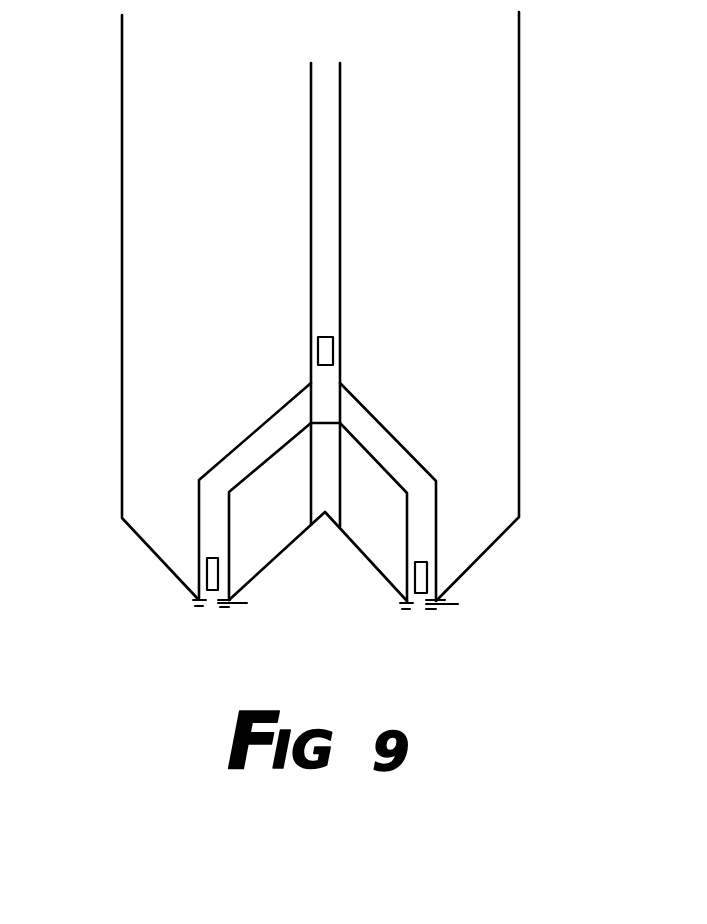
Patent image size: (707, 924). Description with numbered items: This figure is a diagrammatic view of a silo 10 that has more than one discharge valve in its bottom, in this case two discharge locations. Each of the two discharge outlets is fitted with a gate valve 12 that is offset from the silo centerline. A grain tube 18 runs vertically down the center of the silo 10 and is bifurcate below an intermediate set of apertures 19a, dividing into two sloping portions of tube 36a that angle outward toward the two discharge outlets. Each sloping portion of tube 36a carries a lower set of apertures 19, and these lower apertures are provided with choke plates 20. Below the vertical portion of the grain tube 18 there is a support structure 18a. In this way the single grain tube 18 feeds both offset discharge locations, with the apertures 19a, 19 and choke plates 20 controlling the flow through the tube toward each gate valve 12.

The silo 10 is at (519, 52).
The grain tube 18 is at (341, 172).
The support structure 18a is at (327, 453).
The lower set of apertures 19 is at (210, 576).
The intermediate set of apertures 19a is at (327, 350).
The sloping portion of tube 36a is at (233, 459).
The choke plate 20 is at (195, 603).
The gate valve 12 is at (445, 605).